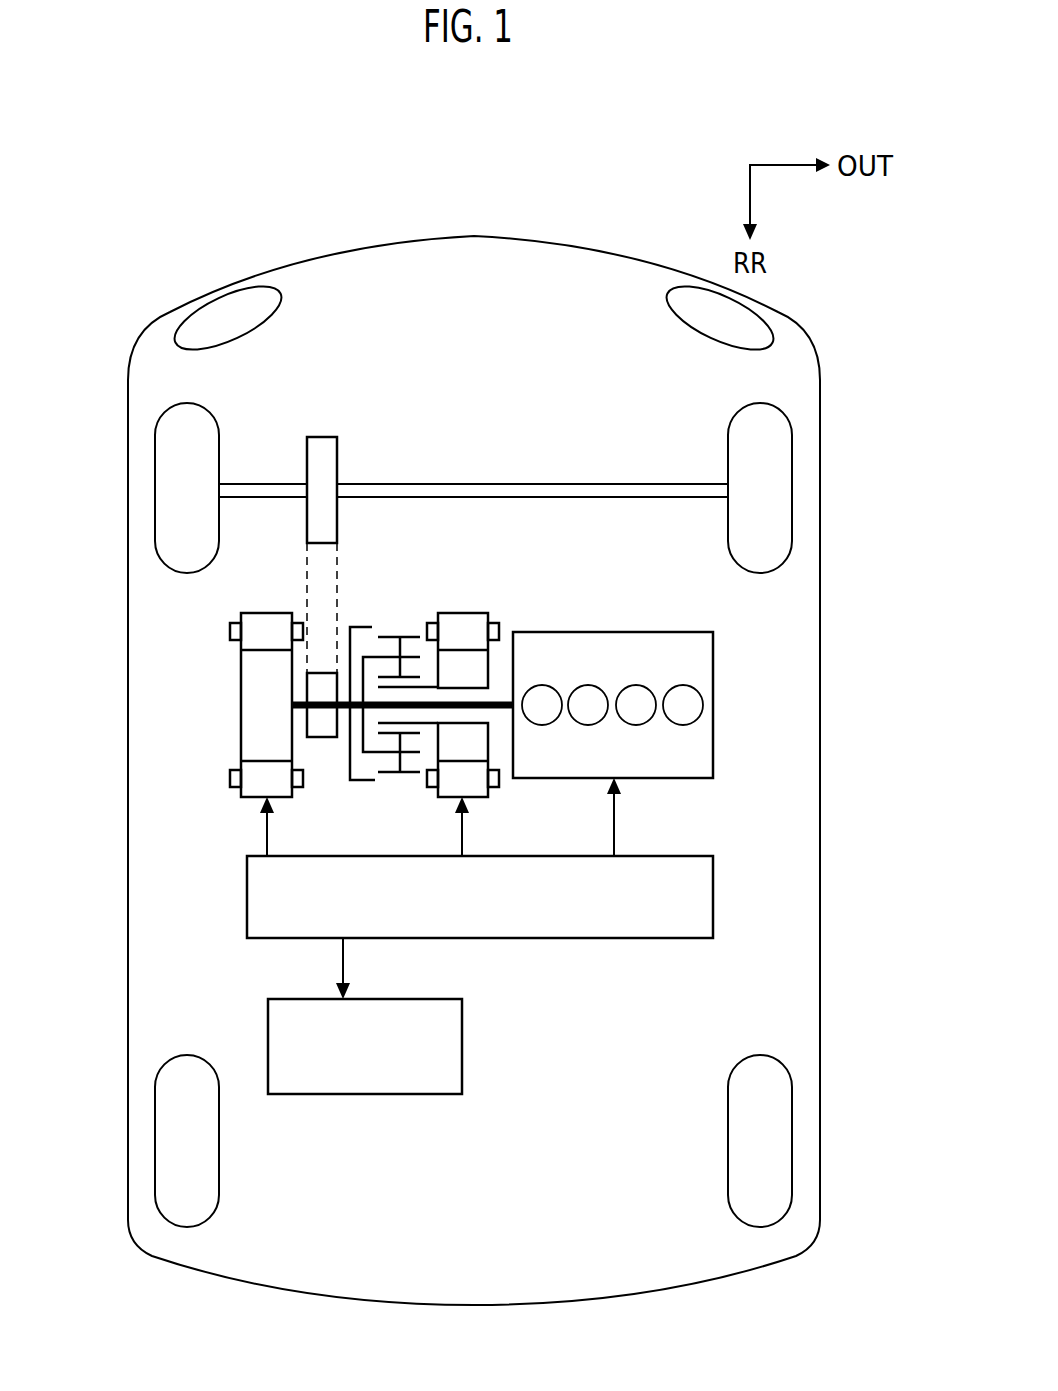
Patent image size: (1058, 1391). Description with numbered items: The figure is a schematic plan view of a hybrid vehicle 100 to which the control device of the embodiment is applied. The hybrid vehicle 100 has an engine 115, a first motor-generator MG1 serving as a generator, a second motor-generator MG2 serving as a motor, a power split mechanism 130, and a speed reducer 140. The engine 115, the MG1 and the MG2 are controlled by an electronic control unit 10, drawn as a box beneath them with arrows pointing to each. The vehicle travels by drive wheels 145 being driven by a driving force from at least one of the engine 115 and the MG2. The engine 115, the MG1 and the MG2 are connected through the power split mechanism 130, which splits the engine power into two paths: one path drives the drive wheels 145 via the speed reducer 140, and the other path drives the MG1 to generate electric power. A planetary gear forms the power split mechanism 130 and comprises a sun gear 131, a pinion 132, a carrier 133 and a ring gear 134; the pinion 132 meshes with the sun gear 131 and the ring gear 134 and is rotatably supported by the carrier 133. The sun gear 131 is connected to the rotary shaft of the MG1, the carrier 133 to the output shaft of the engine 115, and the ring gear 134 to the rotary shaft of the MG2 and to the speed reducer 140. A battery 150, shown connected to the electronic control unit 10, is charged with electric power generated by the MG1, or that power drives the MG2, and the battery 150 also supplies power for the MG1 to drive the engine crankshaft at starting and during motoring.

The hybrid vehicle 100 is at (167, 310).
The drive wheels 145 is at (155, 488).
The speed reducer 140 is at (323, 425).
The second motor-generator MG2 is at (241, 710).
The first motor-generator MG1 is at (463, 613).
The power split mechanism 130 is at (365, 683).
The sun gear 131 is at (430, 727).
The pinion 132 is at (387, 773).
The carrier 133 is at (372, 655).
The ring gear 134 is at (360, 783).
The engine 115 is at (610, 632).
The electronic control unit 10 is at (247, 892).
The battery 150 is at (365, 1096).